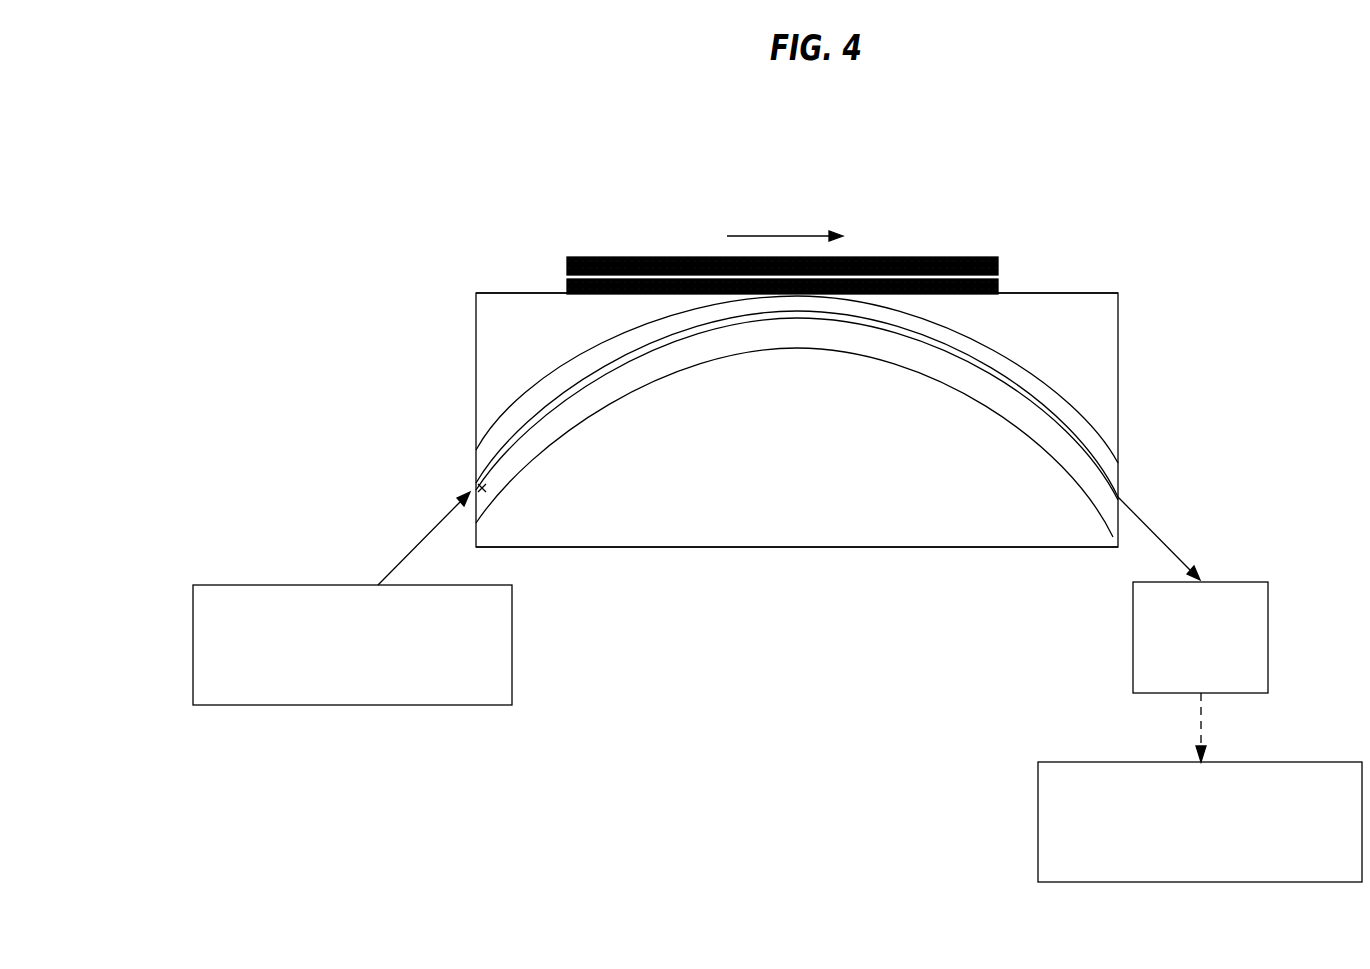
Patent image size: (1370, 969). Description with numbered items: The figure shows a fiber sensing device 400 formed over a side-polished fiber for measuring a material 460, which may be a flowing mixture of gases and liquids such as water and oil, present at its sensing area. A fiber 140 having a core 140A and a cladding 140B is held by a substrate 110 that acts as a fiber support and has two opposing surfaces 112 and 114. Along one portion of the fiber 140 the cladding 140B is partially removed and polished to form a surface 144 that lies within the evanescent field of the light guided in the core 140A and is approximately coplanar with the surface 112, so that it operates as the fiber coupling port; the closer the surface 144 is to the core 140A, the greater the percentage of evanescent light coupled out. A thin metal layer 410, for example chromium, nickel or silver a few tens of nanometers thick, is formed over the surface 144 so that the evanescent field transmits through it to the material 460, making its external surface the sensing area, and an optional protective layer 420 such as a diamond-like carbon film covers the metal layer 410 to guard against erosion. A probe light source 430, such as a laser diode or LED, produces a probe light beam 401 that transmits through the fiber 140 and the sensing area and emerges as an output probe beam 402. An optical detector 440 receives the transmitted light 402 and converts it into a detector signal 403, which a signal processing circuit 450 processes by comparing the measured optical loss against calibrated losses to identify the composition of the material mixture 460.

The fiber sensing device 400 is at (650, 77).
The substrate 110 is at (596, 527).
The surface 112 is at (542, 293).
The surface 114 is at (743, 547).
The fiber 140 is at (1014, 333).
The core 140A is at (1005, 392).
The cladding 140B is at (938, 365).
The surface 144 is at (762, 302).
The metal layer 410 is at (1017, 279).
The protective layer 420 is at (986, 242).
The material 460 is at (782, 236).
The probe light source 430 is at (318, 585).
The probe light beam 401 is at (413, 548).
The output probe beam 402 is at (1140, 517).
The optical detector 440 is at (1235, 582).
The detector signal 403 is at (1198, 730).
The signal processing circuit 450 is at (1285, 762).